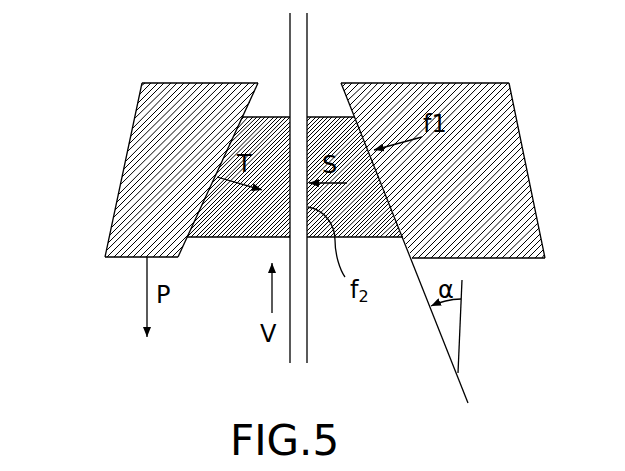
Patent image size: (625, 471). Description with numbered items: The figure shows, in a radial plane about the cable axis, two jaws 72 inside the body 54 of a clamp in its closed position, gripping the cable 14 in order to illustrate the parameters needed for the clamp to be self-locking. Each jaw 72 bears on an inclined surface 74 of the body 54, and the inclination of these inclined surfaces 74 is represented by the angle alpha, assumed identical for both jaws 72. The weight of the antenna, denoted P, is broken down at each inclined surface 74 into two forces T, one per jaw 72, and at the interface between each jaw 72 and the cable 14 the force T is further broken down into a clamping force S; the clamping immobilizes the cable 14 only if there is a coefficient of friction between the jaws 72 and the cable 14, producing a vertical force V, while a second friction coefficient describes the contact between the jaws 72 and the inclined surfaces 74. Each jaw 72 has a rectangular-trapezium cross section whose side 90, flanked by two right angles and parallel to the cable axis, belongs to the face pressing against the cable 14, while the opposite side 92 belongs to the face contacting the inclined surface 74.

The cable 14 is at (307, 32).
The body 54 is at (160, 163).
The jaws 72 is at (267, 130).
The inclined surfaces 74 is at (195, 215).
The side of the trapezium parallel to the cable axis 90 is at (288, 134).
The side of the trapezium opposite side 90 92 is at (207, 197).